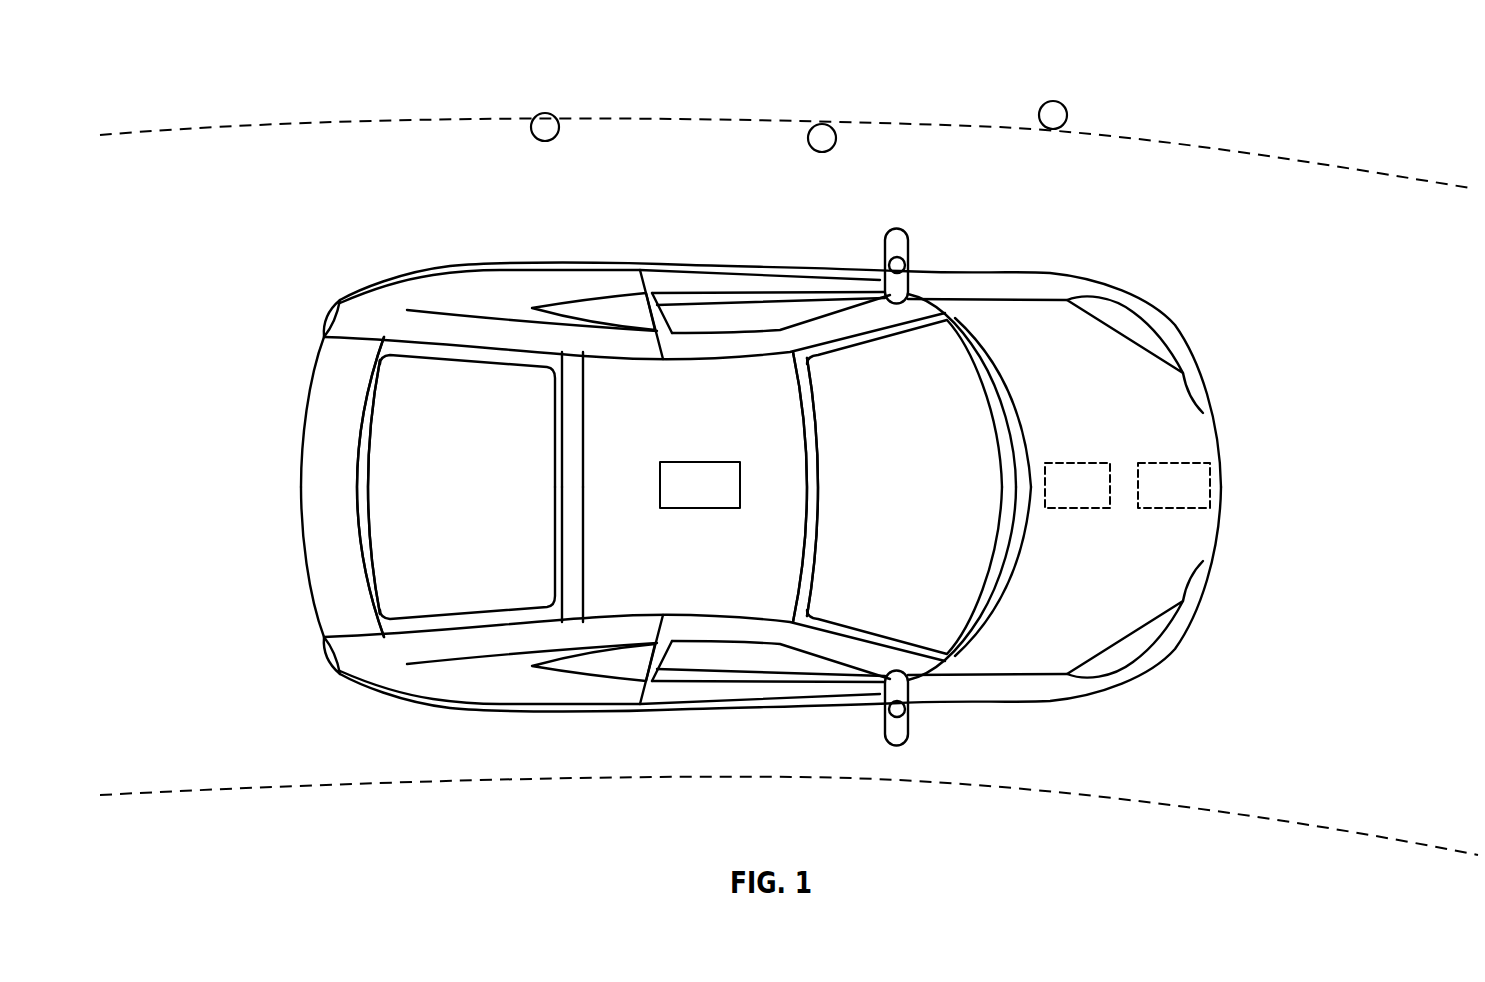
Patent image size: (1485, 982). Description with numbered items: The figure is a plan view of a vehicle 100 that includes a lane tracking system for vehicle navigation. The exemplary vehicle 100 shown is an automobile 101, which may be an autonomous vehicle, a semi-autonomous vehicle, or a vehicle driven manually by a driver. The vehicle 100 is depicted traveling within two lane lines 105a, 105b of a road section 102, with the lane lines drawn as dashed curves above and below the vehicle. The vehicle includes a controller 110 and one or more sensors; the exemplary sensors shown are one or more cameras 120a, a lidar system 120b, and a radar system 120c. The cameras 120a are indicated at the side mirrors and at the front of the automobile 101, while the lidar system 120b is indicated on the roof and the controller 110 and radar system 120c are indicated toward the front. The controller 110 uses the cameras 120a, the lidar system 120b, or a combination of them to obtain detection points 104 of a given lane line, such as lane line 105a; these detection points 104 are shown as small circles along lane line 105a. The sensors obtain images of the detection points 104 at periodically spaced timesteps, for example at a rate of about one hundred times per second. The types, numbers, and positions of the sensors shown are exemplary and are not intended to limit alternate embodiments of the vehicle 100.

The vehicle 100 is at (789, 477).
The automobile 101 is at (789, 486).
The road section 102 is at (1407, 341).
The detection points 104 is at (545, 113).
The lane line 105a is at (217, 128).
The lane line 105b is at (1083, 797).
The controller 110 is at (1098, 498).
The cameras 120a is at (903, 263).
The lidar system 120b is at (728, 498).
The radar system 120c is at (1202, 498).